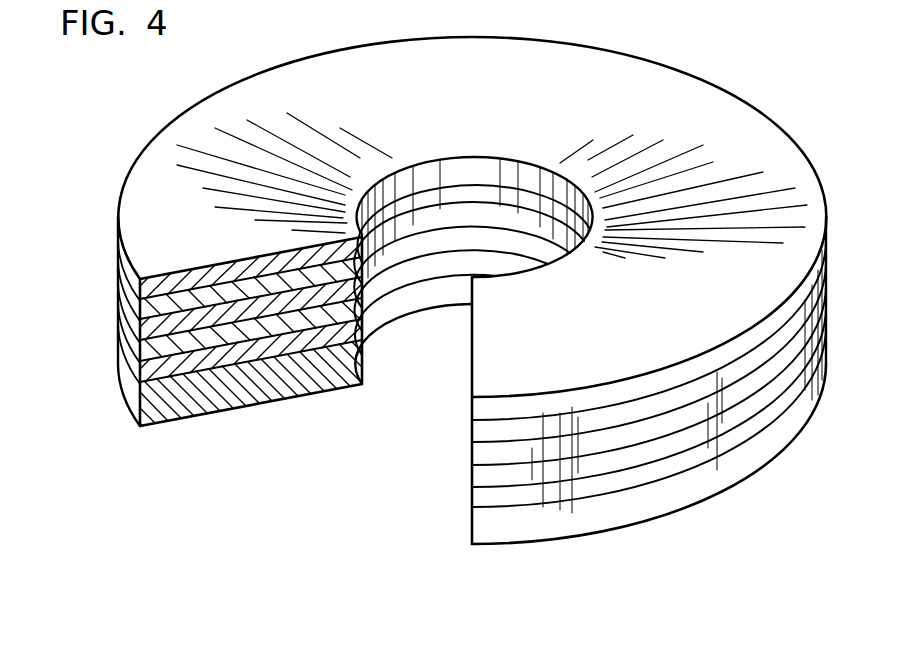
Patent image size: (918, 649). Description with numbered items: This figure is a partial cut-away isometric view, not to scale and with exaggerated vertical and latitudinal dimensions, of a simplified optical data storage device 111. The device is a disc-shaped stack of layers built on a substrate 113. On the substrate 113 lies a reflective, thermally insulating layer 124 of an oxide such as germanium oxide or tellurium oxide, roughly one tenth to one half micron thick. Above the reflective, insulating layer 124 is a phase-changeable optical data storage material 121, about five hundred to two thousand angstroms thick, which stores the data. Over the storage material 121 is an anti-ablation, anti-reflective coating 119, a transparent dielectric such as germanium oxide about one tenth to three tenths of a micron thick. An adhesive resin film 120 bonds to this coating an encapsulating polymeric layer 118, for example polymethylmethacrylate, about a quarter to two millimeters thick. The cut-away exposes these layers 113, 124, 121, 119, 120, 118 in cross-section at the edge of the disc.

The optical data storage device 111 is at (360, 441).
The substrate 113 is at (162, 403).
The encapsulating polymeric layer 118 is at (155, 284).
The adhesive resin film 120 is at (153, 311).
The anti-ablation, anti-reflective coating 119 is at (153, 344).
The phase-changeable optical data storage material 121 is at (157, 366).
The reflective, thermally insulating layer 124 is at (150, 368).